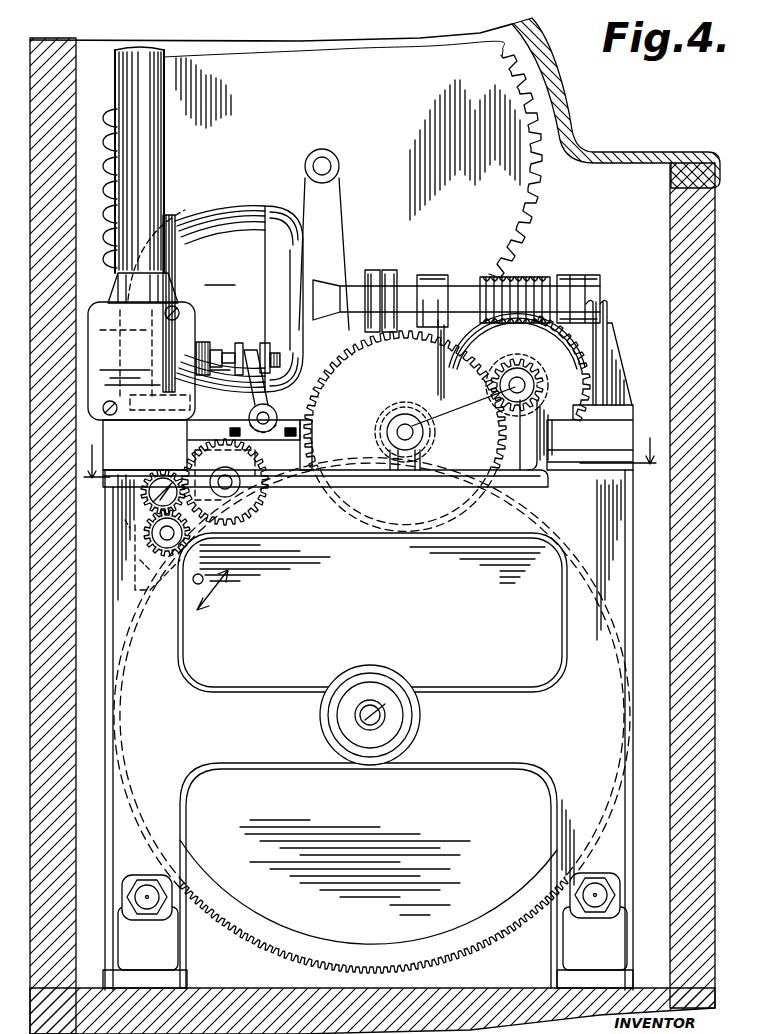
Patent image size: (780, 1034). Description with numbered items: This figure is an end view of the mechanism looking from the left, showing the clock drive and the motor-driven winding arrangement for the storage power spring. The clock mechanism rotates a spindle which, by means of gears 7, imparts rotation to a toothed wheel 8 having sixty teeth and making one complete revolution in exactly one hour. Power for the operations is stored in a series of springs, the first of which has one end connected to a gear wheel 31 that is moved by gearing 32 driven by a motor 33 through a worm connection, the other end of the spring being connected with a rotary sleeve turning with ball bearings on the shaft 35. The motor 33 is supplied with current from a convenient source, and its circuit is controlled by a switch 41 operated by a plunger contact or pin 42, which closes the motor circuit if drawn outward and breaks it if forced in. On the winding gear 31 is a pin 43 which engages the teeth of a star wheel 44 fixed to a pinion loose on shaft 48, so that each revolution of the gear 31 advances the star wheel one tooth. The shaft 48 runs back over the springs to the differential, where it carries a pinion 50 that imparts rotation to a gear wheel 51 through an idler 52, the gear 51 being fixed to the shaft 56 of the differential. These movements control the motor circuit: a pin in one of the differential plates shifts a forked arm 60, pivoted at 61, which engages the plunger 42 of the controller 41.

The gears 7 is at (372, 472).
The toothed wheel 8 is at (540, 198).
The gear wheel 31 is at (502, 926).
The gearing 32 is at (409, 431).
The motor 33 is at (233, 299).
The shaft 35 is at (378, 708).
The switch 41 is at (141, 361).
The plunger contact or pin 42 is at (237, 347).
The pin 43 is at (212, 588).
The star wheel 44 is at (204, 563).
The shaft 48 is at (160, 536).
The pinion 50 is at (151, 550).
The gear wheel 51 is at (256, 505).
The idler 52 is at (163, 470).
The shaft 56 is at (250, 480).
The forked arm 60 is at (258, 395).
The pivot 61 is at (282, 414).